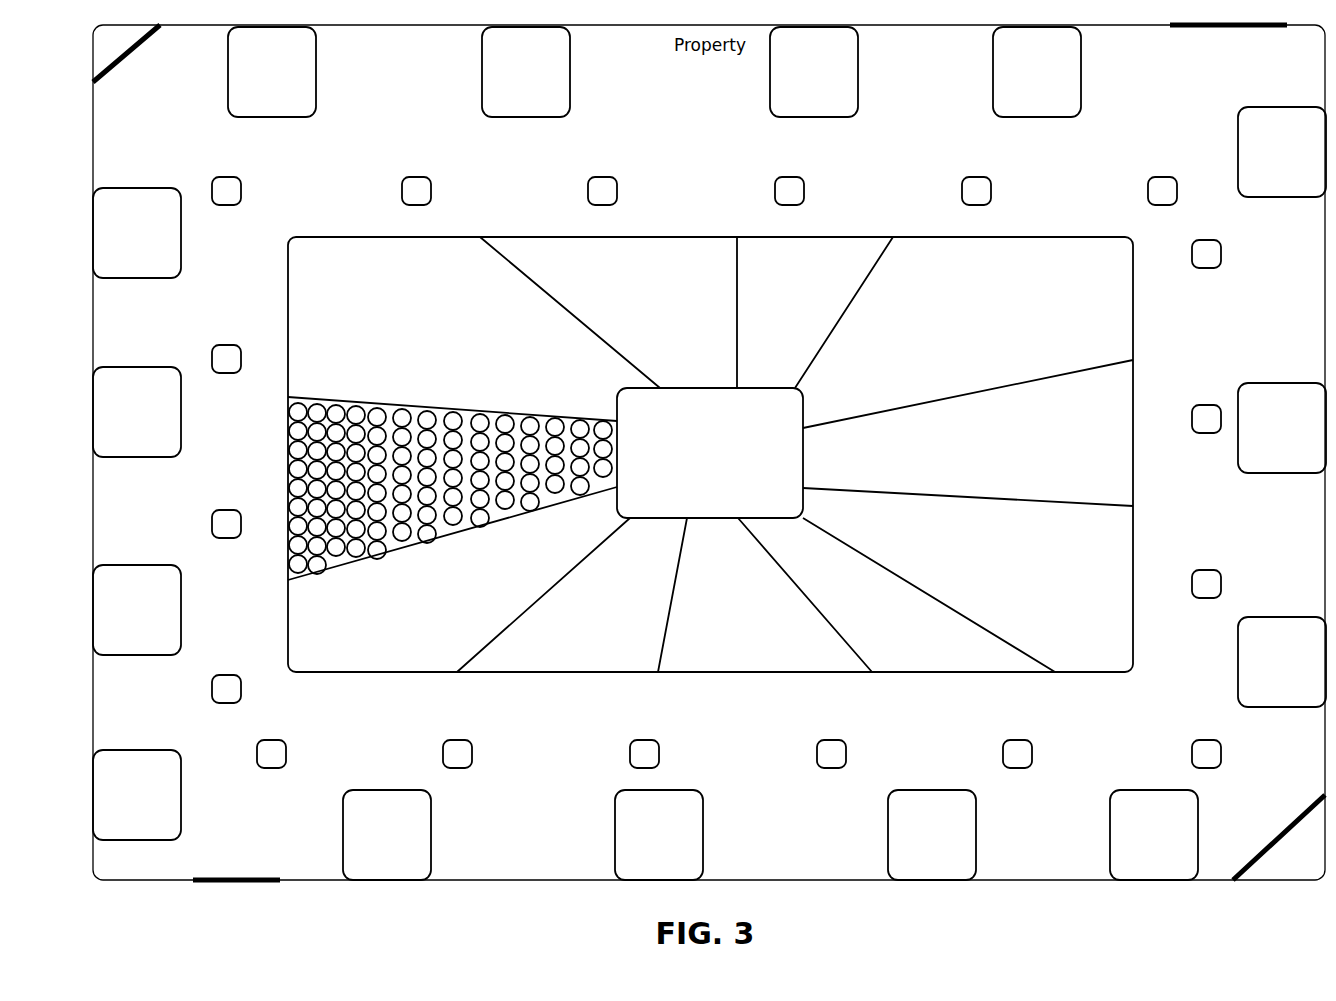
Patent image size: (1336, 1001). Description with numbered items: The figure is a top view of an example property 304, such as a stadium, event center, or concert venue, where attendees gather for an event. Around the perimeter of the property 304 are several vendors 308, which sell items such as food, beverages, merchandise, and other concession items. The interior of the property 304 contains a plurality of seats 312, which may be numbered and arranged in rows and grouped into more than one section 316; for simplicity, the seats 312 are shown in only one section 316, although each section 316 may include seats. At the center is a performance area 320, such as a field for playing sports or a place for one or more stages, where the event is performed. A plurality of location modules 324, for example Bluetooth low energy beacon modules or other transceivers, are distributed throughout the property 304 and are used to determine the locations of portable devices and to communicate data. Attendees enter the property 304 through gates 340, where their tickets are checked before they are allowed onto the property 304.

The property 304 is at (1033, 882).
The vendor 308 is at (430, 828).
The seat 312 is at (425, 540).
The section 316 is at (287, 566).
The performance area 320 is at (660, 520).
The location module 324 is at (400, 190).
The gate 340 is at (122, 60).